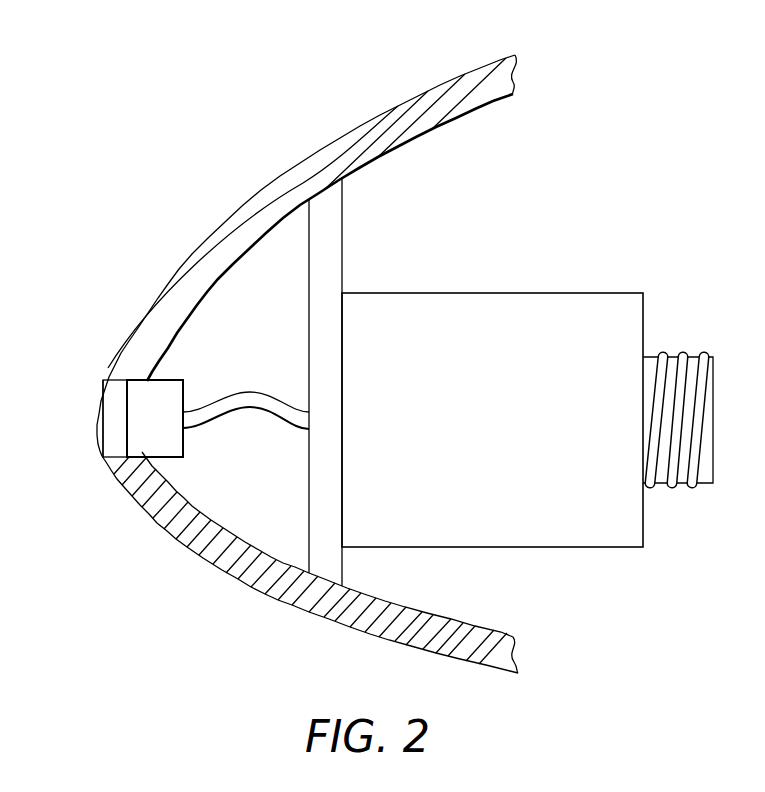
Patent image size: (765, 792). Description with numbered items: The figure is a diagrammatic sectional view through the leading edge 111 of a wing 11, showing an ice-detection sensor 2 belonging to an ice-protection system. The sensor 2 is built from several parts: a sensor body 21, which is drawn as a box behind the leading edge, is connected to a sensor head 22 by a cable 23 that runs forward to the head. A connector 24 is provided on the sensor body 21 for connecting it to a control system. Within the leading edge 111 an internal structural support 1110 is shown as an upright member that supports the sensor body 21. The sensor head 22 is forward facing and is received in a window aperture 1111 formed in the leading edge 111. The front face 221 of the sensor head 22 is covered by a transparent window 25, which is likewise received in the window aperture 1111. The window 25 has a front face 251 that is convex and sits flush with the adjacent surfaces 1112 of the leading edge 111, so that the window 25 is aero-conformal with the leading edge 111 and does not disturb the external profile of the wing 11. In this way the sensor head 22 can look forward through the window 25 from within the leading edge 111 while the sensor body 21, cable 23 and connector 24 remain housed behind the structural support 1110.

The wing 11 is at (268, 343).
The leading edge 111 is at (116, 339).
The internal structural support 1110 is at (343, 216).
The window aperture 1111 is at (104, 390).
The adjacent surfaces 1112 is at (108, 368).
The ice-detection sensor 2 is at (375, 373).
The sensor body 21 is at (472, 293).
The sensor head 22 is at (135, 409).
The front face 221 is at (126, 424).
The cable 23 is at (247, 410).
The connector 24 is at (703, 488).
The transparent window 25 is at (80, 428).
The front face 251 is at (100, 444).